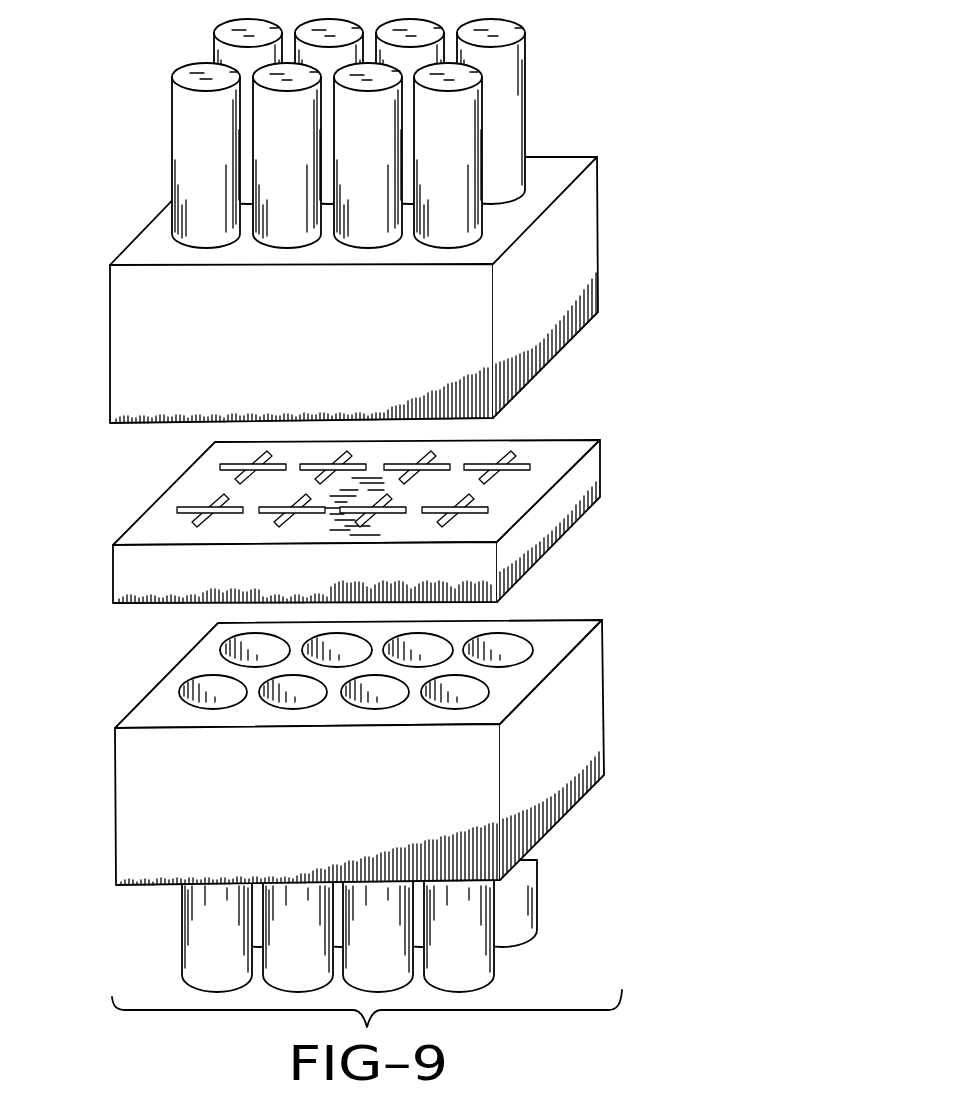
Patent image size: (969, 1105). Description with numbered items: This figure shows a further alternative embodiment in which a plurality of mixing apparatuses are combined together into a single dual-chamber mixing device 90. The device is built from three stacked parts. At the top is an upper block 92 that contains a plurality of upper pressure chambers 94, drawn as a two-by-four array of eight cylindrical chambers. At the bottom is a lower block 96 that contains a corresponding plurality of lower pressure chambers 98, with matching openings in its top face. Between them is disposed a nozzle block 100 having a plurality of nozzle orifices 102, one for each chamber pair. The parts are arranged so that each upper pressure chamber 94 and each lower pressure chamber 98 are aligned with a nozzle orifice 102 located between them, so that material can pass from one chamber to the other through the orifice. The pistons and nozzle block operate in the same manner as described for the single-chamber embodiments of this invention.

The dual-chamber mixing device 90 is at (54, 418).
The upper block 92 is at (565, 230).
The upper pressure chambers 94 is at (505, 125).
The lower block 96 is at (562, 690).
The lower pressure chambers 98 is at (202, 942).
The nozzle block 100 is at (130, 570).
The nozzle orifices 102 is at (508, 457).